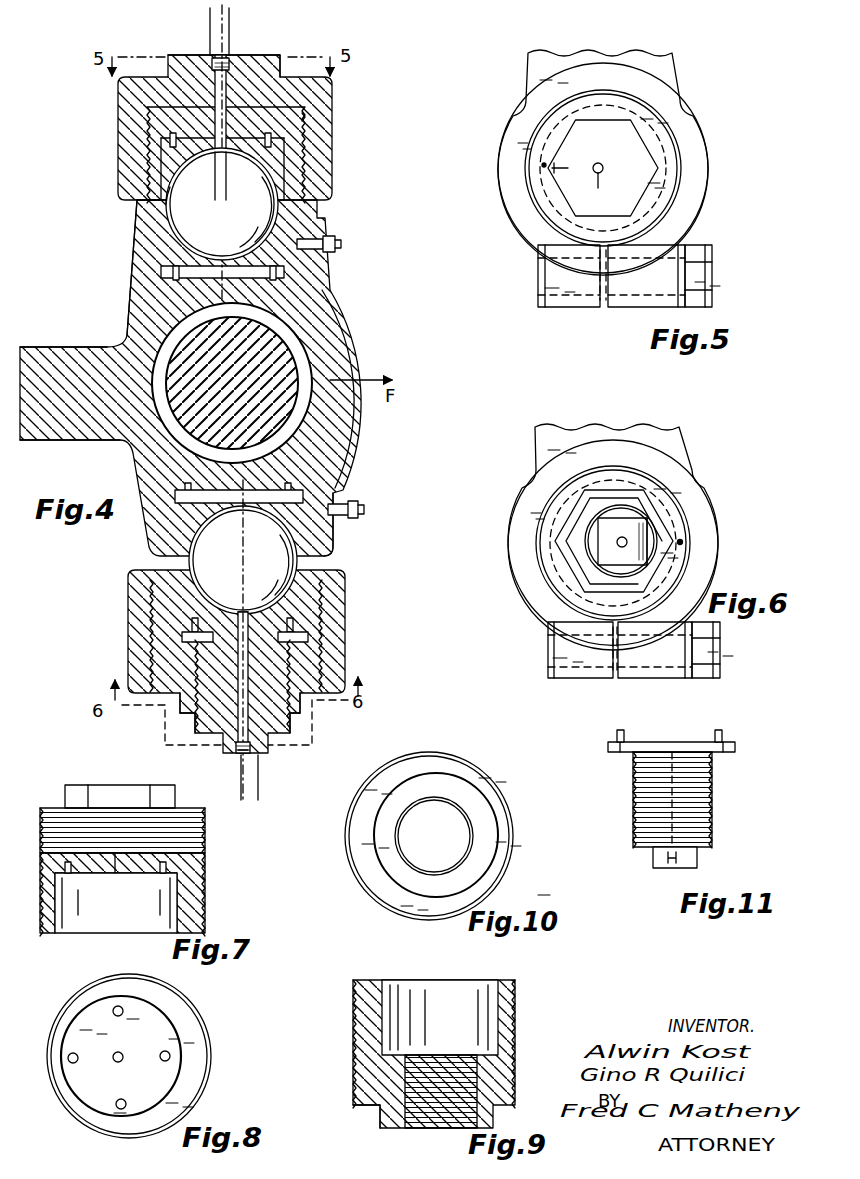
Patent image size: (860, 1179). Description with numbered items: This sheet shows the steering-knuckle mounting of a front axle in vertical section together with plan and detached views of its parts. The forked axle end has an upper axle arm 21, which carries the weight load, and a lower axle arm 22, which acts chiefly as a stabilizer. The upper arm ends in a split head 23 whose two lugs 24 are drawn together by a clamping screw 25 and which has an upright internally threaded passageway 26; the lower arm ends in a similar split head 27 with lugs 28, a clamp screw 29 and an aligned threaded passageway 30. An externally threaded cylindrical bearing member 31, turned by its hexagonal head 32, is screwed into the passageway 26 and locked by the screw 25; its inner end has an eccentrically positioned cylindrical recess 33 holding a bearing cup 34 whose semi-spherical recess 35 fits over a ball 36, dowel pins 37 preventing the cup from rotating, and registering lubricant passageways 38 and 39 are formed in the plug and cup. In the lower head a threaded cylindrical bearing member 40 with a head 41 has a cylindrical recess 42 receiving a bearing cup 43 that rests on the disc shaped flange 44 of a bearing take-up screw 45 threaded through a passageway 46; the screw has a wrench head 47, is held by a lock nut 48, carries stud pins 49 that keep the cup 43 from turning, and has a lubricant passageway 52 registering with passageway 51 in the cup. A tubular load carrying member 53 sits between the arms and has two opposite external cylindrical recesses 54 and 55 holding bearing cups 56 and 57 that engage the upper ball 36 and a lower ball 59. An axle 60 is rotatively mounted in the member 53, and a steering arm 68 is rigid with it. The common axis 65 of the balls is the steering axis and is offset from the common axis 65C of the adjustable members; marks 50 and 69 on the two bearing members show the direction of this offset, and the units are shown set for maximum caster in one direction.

In FIG. 5, the upper axle arm 21 is at (672, 62).
In FIG. 6, the lower axle arm 22 is at (672, 438).
In FIG. 4, the split head 23 is at (332, 147).
In FIG. 5, the split head 23 is at (700, 190).
In FIG. 5, the flanges or lugs 24 is at (630, 306).
In FIG. 5, the clamping screw 25 is at (540, 290).
In FIG. 4, the internally threaded passageway 26 is at (306, 114).
In FIG. 4, the split head 27 is at (338, 592).
In FIG. 6, the split head 27 is at (712, 535).
In FIG. 6, the lugs 28 is at (642, 682).
In FIG. 6, the clamp screw 29 is at (548, 672).
In FIG. 4, the internally threaded passageway 30 is at (324, 665).
In FIG. 4, the cylindrical bearing member 31 is at (318, 90).
In FIG. 5, the cylindrical bearing member 31 is at (672, 150).
In FIG. 7, the cylindrical bearing member 31 is at (195, 897).
In FIG. 8, the cylindrical bearing member 31 is at (198, 1055).
In FIG. 4, the head 32 is at (285, 60).
In FIG. 5, the head 32 is at (640, 135).
In FIG. 7, the head 32 is at (66, 795).
In FIG. 4, the eccentrically positioned cylindrical recess 33 is at (312, 167).
In FIG. 7, the eccentrically positioned cylindrical recess 33 is at (103, 931).
In FIG. 8, the eccentrically positioned cylindrical recess 33 is at (78, 1026).
In FIG. 4, the bearing cup 34 is at (170, 160).
In FIG. 4, the semi-spherical recess 35 is at (250, 160).
In FIG. 4, the spherical bearing member or ball 36 is at (168, 204).
In FIG. 4, the dowel pins 37 is at (165, 138).
In FIG. 4, the lubricant passageway 38 is at (160, 103).
In FIG. 5, the lubricant passageway 38 is at (602, 189).
In FIG. 4, the lubricant passageway 39 is at (213, 160).
In FIG. 4, the cylindrical bearing member 40 is at (165, 667).
In FIG. 9, the cylindrical bearing member 40 is at (375, 985).
In FIG. 10, the cylindrical bearing member 40 is at (388, 893).
In FIG. 4, the head 41 is at (183, 716).
In FIG. 6, the head 41 is at (585, 568).
In FIG. 9, the head 41 is at (385, 1122).
In FIG. 4, the cylindrical recess 42 is at (322, 620).
In FIG. 9, the cylindrical recess 42 is at (470, 988).
In FIG. 10, the cylindrical recess 42 is at (495, 843).
In FIG. 4, the bearing cup 43 is at (180, 592).
In FIG. 4, the disc shaped flange 44 is at (190, 631).
In FIG. 11, the disc shaped flange 44 is at (736, 748).
In FIG. 4, the bearing take-up screw 45 is at (192, 740).
In FIG. 6, the bearing take-up screw 45 is at (598, 543).
In FIG. 11, the bearing take-up screw 45 is at (714, 806).
In FIG. 4, the passageway 46 is at (205, 657).
In FIG. 9, the passageway 46 is at (440, 1065).
In FIG. 10, the passageway 46 is at (462, 826).
In FIG. 4, the head 47 is at (268, 752).
In FIG. 6, the head 47 is at (637, 527).
In FIG. 11, the head 47 is at (700, 856).
In FIG. 4, the lock nut 48 is at (300, 718).
In FIG. 6, the lock nut 48 is at (652, 560).
In FIG. 4, the stud pins 49 is at (243, 560).
In FIG. 11, the stud pins 49 is at (714, 735).
In FIG. 5, the mark 50 is at (546, 174).
In FIG. 4, the lubricant passageway 51 is at (243, 612).
In FIG. 4, the lubricant passageway 52 is at (245, 754).
In FIG. 6, the lubricant passageway 52 is at (622, 537).
In FIG. 4, the load carrying member 53 is at (333, 437).
In FIG. 4, the external cylindrical recess 54 is at (160, 234).
In FIG. 4, the external cylindrical recess 55 is at (312, 531).
In FIG. 4, the bearing cup 56 is at (178, 252).
In FIG. 4, the bearing cup 57 is at (318, 490).
In FIG. 4, the spherical bearing member or ball 59 is at (200, 548).
In FIG. 4, the axle 60 is at (290, 353).
In FIG. 4, the common axis 65 is at (210, 22).
In FIG. 4, the common axis 65C is at (230, 22).
In FIG. 4, the steering arm 68 is at (42, 360).
In FIG. 6, the marker 69 is at (683, 542).